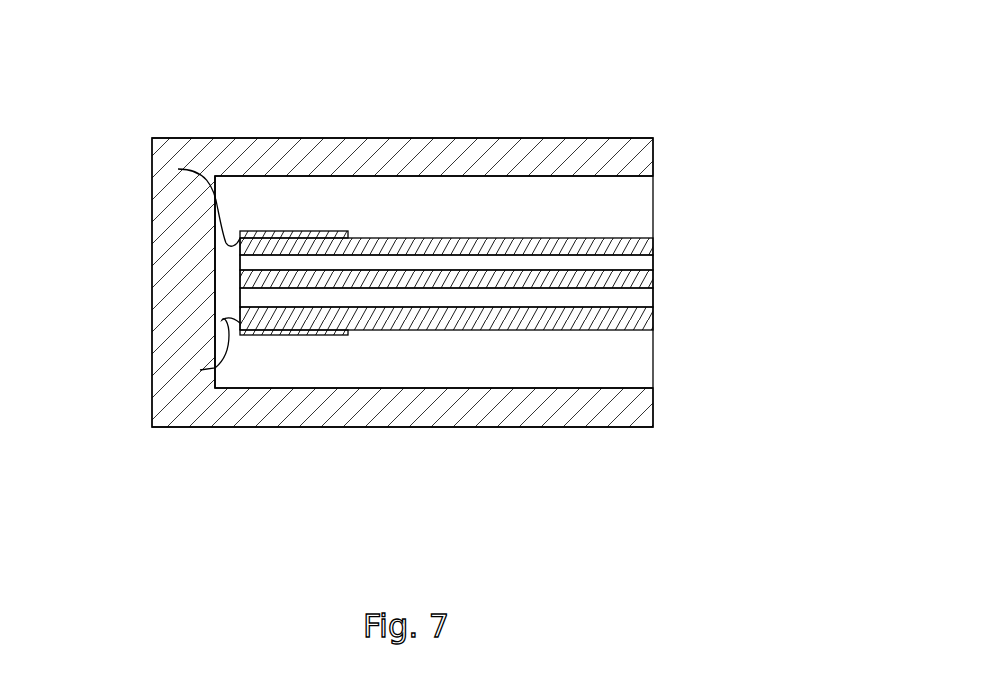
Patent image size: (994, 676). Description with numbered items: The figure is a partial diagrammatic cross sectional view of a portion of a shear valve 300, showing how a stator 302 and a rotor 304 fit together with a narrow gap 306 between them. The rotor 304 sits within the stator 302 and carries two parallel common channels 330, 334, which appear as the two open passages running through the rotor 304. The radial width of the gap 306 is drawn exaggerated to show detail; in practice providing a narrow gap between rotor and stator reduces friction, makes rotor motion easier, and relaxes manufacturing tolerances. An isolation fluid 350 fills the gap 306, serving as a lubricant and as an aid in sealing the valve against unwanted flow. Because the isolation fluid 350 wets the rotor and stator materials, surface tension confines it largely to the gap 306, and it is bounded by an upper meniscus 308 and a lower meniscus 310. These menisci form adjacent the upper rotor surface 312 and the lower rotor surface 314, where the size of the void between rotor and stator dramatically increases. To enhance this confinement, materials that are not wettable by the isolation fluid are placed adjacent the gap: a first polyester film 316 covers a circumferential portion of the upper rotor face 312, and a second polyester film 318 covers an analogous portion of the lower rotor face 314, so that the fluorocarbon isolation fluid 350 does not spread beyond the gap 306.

The shear valve 300 is at (424, 264).
The stator 302 is at (401, 160).
The rotor 304 is at (643, 280).
The gap 306 is at (218, 307).
The upper meniscus 308 is at (178, 169).
The lower meniscus 310 is at (200, 370).
The upper rotor surface 312 is at (500, 238).
The lower rotor surface 314 is at (415, 325).
The first polyester film 316 is at (310, 232).
The second polyester film 318 is at (295, 332).
The common channel 330 is at (638, 261).
The common channel 334 is at (630, 298).
The isolation fluid 350 is at (226, 290).